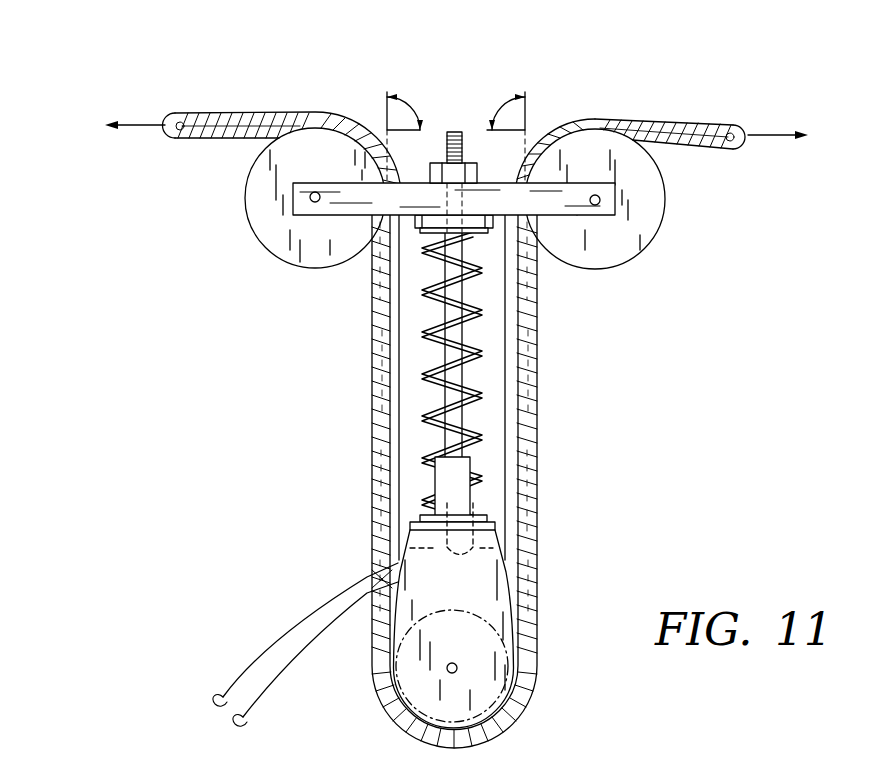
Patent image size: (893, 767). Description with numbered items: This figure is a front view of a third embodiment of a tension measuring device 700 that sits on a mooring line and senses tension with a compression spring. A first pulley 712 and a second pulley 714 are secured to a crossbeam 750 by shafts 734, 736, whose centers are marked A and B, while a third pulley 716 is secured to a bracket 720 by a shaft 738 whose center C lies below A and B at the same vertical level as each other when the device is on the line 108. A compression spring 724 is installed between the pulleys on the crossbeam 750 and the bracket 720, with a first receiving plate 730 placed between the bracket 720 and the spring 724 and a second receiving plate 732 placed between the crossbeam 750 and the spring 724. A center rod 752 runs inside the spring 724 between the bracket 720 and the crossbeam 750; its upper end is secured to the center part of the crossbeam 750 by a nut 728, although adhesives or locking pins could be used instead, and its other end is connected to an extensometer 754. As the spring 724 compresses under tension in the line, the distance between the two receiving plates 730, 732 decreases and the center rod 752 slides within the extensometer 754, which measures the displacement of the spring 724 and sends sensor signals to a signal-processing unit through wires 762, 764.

The tension measuring device 700 is at (508, 68).
The cable 108 is at (675, 123).
The first pulley 712 is at (290, 232).
The second pulley 714 is at (633, 175).
The third pulley 716 is at (535, 663).
The bracket 720 is at (493, 590).
The compression spring 724 is at (480, 390).
The nut 728 is at (473, 170).
The first receiving plate 730 is at (495, 525).
The second receiving plate 732 is at (487, 225).
The shaft 734 is at (310, 193).
The shaft 736 is at (601, 202).
The shaft 738 is at (452, 673).
The crossbeam 750 is at (543, 200).
The center rod 752 is at (482, 303).
The extensometer 754 is at (447, 472).
The wire 762 is at (267, 693).
The wire 764 is at (257, 657).